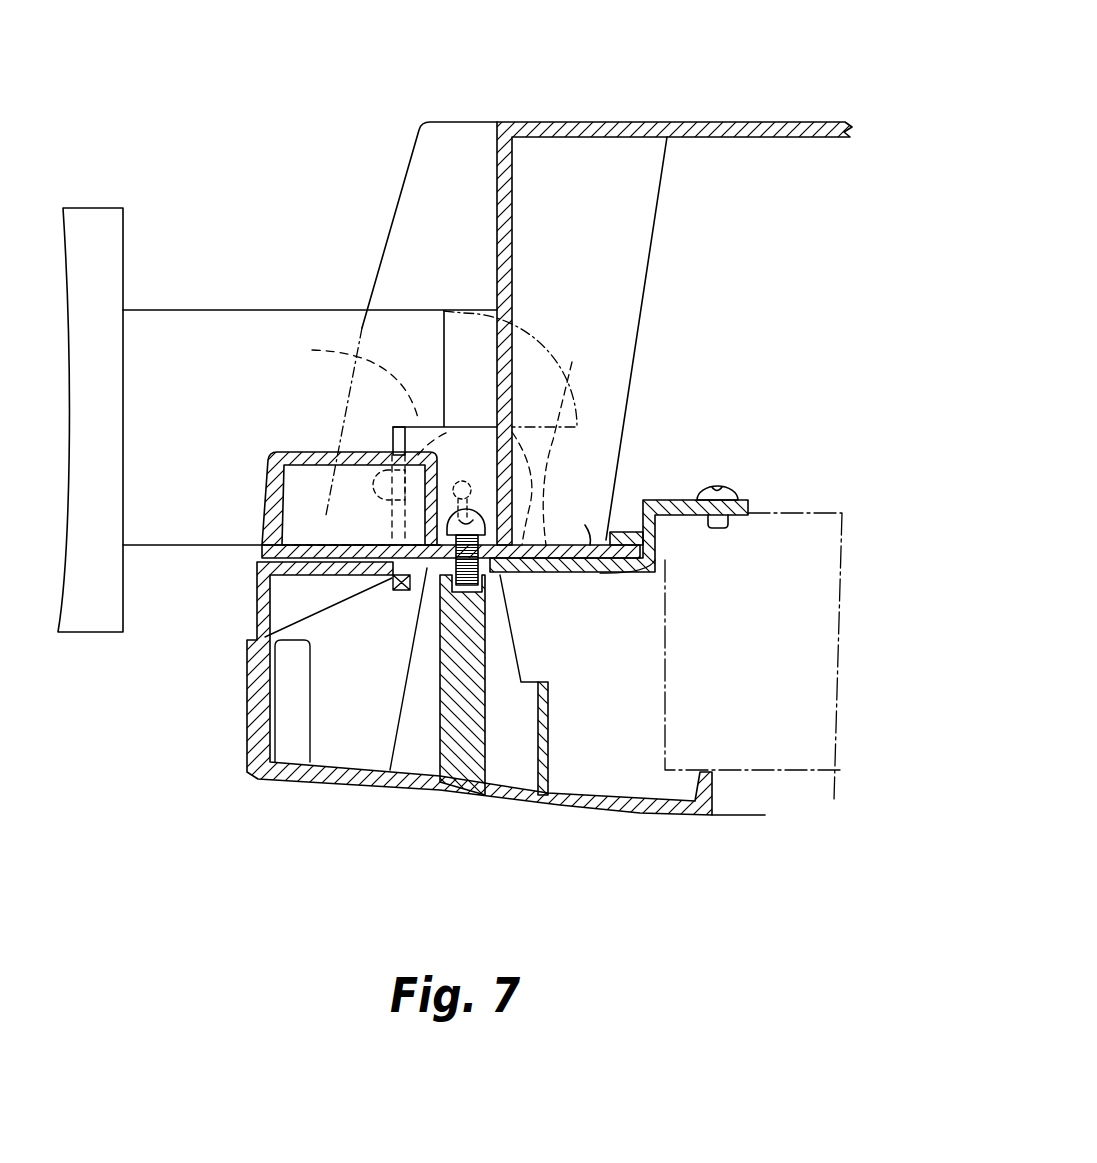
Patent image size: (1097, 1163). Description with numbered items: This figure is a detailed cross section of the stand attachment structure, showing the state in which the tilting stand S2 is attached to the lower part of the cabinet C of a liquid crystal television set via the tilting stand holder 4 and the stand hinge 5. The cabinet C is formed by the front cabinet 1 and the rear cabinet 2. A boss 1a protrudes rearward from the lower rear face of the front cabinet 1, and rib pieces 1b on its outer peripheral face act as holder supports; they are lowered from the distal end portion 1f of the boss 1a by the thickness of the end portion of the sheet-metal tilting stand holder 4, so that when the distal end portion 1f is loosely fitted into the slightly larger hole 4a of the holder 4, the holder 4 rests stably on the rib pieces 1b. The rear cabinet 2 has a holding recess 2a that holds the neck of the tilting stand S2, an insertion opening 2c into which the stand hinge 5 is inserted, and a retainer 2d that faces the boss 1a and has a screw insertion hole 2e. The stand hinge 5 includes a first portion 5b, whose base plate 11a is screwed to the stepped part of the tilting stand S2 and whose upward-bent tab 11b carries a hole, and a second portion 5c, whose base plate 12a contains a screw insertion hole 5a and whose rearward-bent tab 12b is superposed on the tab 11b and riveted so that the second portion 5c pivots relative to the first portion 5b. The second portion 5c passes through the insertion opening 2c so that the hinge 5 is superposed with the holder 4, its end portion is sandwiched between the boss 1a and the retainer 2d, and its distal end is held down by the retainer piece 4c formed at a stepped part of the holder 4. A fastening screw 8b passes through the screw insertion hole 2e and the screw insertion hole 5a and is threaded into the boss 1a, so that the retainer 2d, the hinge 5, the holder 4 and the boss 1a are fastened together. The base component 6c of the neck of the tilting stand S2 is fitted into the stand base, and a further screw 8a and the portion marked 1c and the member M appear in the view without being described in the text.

The front cabinet 1 is at (639, 815).
The boss 1a is at (452, 718).
The rib piece 1b is at (420, 686).
The screw hole 1c is at (478, 600).
The distal end portion 1f is at (500, 578).
The rear cabinet 2 is at (581, 122).
The holding recess 2a is at (473, 149).
The insertion opening 2c is at (264, 555).
The retainer 2d is at (500, 572).
The screw insertion hole 2e is at (445, 543).
The tilting stand holder 4 is at (597, 574).
The hole 4a is at (432, 592).
The retainer piece 4c is at (624, 532).
The stand hinge 5 is at (570, 545).
The screw insertion hole 5a is at (395, 592).
The first portion 5b is at (393, 437).
The second portion 5c is at (585, 545).
The base component 6c is at (104, 208).
The tilting stand S2 is at (221, 310).
The screw 8a is at (732, 487).
The fastening screw 8b is at (466, 512).
The base plate 11a is at (393, 446).
The tab 11b is at (355, 392).
The base plate 12a is at (600, 535).
The tab 12b is at (523, 428).
The cabinet C is at (748, 88).
The mounting member M is at (798, 513).